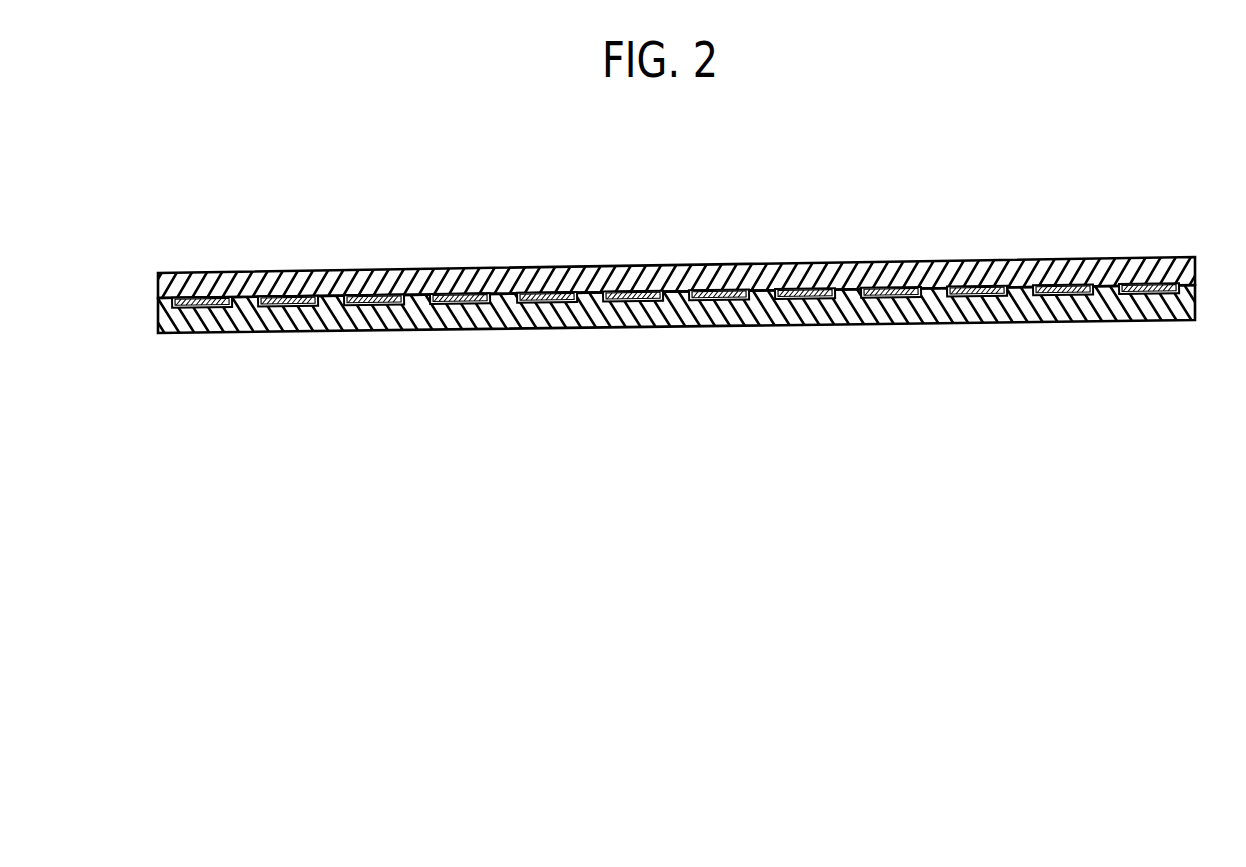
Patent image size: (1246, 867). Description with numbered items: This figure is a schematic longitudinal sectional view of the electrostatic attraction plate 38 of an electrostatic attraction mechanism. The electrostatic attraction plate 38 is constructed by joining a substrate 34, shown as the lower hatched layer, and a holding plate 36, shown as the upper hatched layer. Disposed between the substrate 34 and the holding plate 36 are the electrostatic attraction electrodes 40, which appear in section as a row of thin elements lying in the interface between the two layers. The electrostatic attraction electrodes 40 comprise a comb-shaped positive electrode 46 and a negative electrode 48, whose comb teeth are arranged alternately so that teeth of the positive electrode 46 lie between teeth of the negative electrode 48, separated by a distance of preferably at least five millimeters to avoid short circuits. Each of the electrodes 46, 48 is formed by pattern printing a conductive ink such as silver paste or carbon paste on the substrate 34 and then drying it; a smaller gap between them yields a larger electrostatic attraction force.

The electrostatic attraction plate 38 is at (955, 177).
The holding plate 36 is at (692, 272).
The substrate 34 is at (553, 318).
The electrostatic attraction electrodes 40 is at (698, 356).
The positive electrode 46 is at (296, 305).
The negative electrode 48 is at (205, 305).